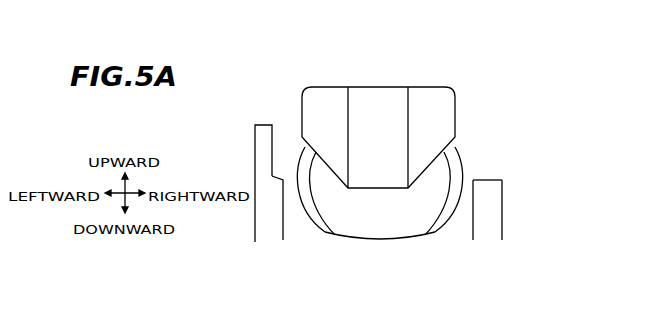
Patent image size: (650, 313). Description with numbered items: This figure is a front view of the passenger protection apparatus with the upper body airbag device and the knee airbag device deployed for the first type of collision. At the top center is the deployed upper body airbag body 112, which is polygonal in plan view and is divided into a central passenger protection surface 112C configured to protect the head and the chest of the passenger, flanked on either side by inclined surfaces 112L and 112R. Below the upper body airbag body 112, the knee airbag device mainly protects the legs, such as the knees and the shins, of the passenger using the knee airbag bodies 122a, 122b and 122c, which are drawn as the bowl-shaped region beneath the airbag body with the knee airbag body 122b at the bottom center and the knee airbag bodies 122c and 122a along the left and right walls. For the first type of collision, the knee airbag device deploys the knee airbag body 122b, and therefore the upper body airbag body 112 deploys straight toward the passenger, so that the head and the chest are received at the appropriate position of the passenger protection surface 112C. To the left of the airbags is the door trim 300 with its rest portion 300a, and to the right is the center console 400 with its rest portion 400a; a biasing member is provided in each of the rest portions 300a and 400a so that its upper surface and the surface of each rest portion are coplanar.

The upper body airbag body 112 is at (379, 163).
The inclined surface 112L is at (327, 95).
The passenger protection surface 112C is at (378, 95).
The inclined surface 112R is at (433, 95).
The knee airbag body 122a is at (438, 218).
The knee airbag body 122b is at (377, 239).
The knee airbag body 122c is at (318, 218).
The door trim 300 is at (252, 209).
The rest portion 300a is at (272, 175).
The center console 400 is at (495, 220).
The rest portion 400a is at (488, 180).